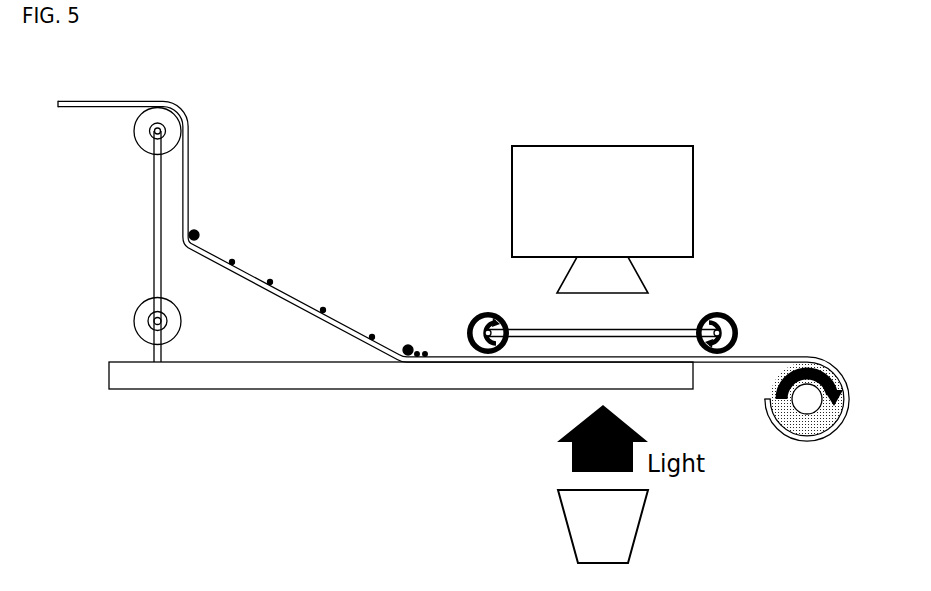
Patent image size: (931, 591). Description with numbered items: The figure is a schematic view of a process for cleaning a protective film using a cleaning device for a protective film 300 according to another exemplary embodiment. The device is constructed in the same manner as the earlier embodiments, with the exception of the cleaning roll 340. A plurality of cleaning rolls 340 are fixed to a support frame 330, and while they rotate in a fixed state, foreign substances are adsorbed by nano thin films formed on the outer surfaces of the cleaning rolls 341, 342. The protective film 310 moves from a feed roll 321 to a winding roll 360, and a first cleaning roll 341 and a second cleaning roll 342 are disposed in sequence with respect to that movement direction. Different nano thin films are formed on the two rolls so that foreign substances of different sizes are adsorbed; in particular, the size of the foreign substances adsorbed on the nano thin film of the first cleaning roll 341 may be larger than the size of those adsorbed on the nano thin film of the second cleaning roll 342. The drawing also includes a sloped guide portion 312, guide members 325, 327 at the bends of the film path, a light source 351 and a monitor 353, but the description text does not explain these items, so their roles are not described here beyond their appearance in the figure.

The cleaning device for a protective film 300 is at (103, 94).
The protective film 310 is at (420, 352).
The inclined support member 312 is at (273, 275).
The feed roll 321 is at (187, 132).
The guide member 325 is at (222, 219).
The guide member 327 is at (407, 345).
The support frame 330 is at (280, 382).
The cleaning roll 340 is at (644, 297).
The first cleaning roll 341 is at (488, 312).
The second cleaning roll 342 is at (735, 312).
The light source 351 is at (623, 533).
The monitor / controller 353 is at (538, 160).
The winding roll 360 is at (772, 425).